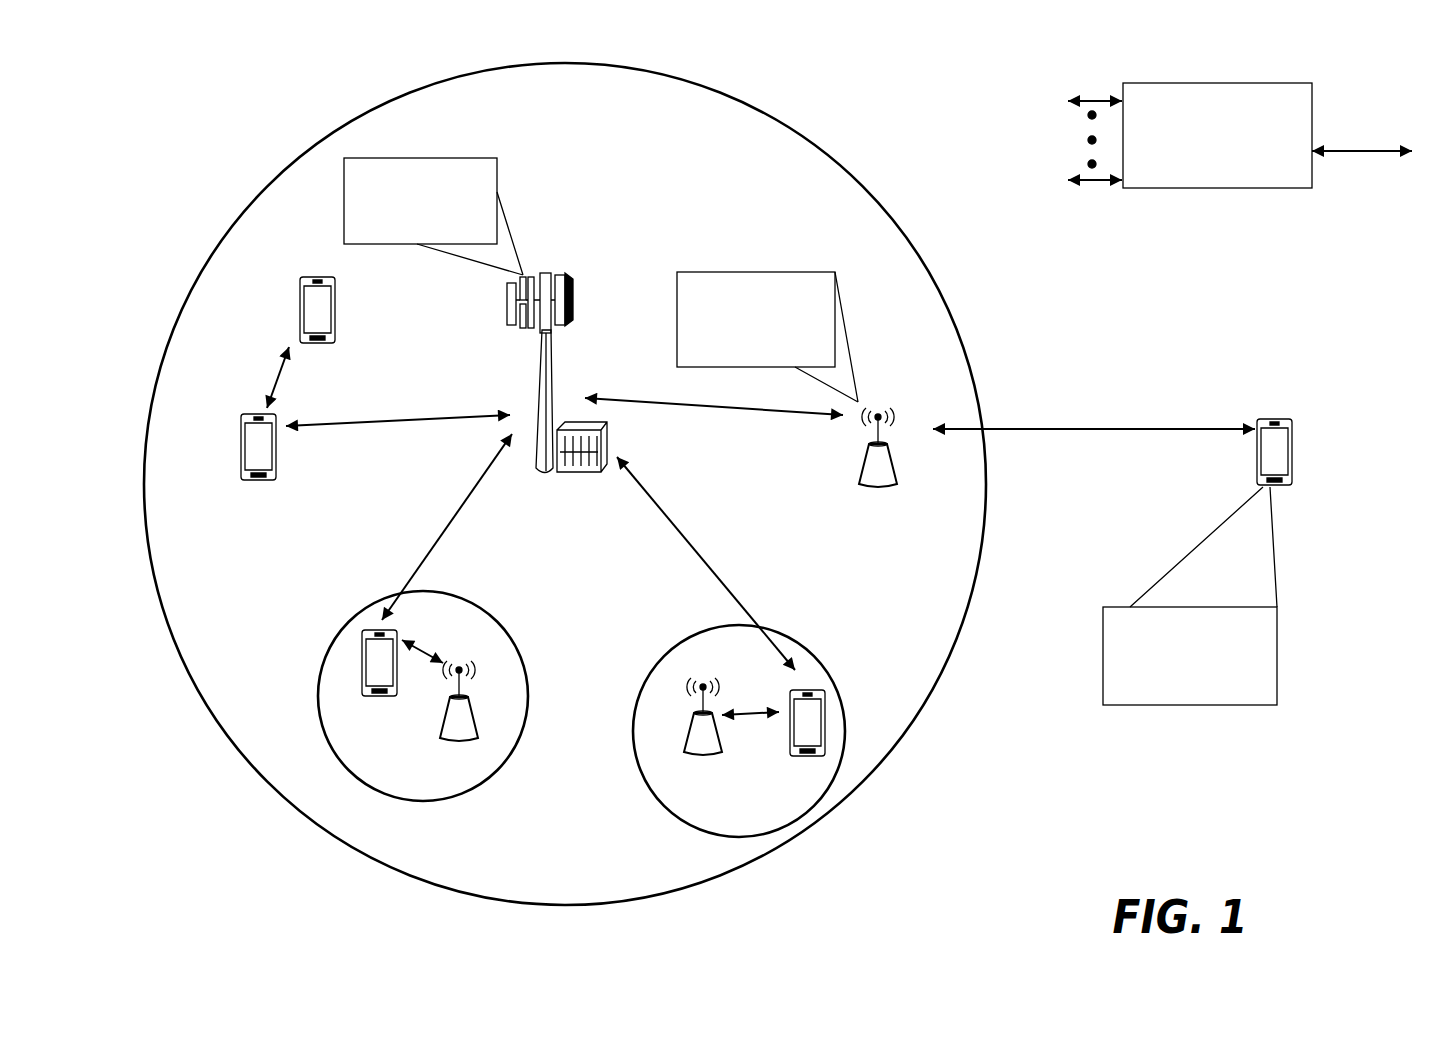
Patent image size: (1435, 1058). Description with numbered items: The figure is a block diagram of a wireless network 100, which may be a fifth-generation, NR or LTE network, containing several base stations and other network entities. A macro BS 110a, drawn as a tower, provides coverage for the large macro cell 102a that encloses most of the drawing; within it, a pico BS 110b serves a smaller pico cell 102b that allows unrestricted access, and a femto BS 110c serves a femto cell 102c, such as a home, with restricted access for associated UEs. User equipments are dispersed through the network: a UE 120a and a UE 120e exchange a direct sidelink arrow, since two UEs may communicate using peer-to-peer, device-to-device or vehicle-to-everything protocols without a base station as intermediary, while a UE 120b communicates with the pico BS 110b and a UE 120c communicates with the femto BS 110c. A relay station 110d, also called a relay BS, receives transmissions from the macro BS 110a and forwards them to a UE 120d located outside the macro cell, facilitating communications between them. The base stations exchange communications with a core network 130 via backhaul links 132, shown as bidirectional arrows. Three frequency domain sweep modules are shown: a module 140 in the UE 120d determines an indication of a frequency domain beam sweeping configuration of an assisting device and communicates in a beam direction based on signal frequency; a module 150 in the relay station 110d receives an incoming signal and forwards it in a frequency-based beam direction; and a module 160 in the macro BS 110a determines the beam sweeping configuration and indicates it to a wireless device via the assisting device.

The wireless network 100 is at (224, 107).
The macro cell 102a is at (842, 168).
The pico cell 102b is at (513, 635).
The femto cell 102c is at (680, 643).
The macro BS 110a is at (548, 263).
The pico BS 110b is at (477, 730).
The femto BS 110c is at (688, 737).
The relay station 110d is at (878, 405).
The UE 120a is at (242, 449).
The UE 120b is at (365, 700).
The UE 120c is at (792, 760).
The UE 120d is at (1299, 490).
The UE 120e is at (302, 302).
The core network 130 is at (1193, 83).
The backhaul links 132 is at (1090, 95).
The frequency domain sweep module 140 is at (1195, 705).
The frequency domain sweep module 150 is at (777, 272).
The frequency domain sweep module 160 is at (487, 157).